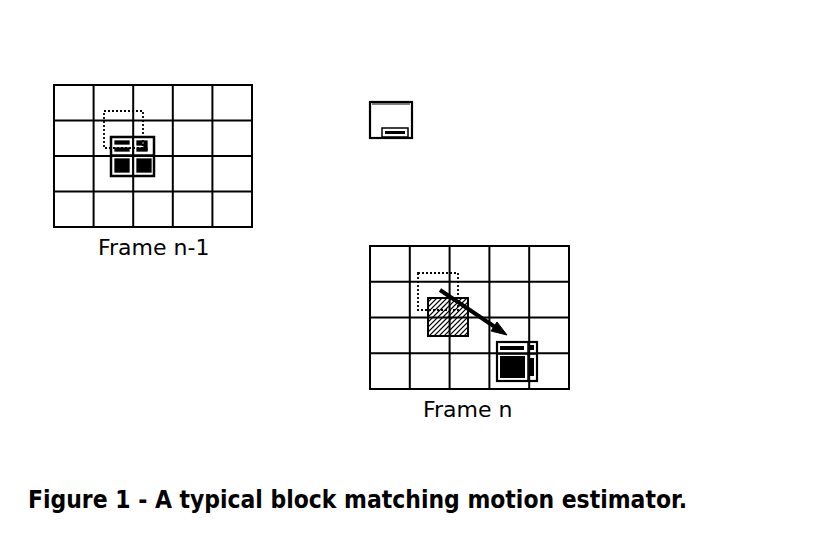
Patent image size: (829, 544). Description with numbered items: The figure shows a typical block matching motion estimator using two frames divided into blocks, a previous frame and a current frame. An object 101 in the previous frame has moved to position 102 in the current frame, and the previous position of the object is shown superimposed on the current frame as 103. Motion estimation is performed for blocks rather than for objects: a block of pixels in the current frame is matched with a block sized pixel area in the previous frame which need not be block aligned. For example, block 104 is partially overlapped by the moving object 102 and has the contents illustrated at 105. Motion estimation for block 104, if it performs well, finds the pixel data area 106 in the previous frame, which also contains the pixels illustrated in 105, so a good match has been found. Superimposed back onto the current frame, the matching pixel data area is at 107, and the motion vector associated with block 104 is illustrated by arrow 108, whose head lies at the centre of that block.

The object 101 is at (154, 147).
The position of moved object 102 is at (497, 366).
The previous position of the object 103 is at (428, 322).
The block 104 is at (514, 322).
The block contents 105 is at (412, 119).
The pixel data area 106 is at (101, 146).
The matching pixel data area superimposed on current frame 107 is at (433, 273).
The motion vector 108 is at (484, 308).